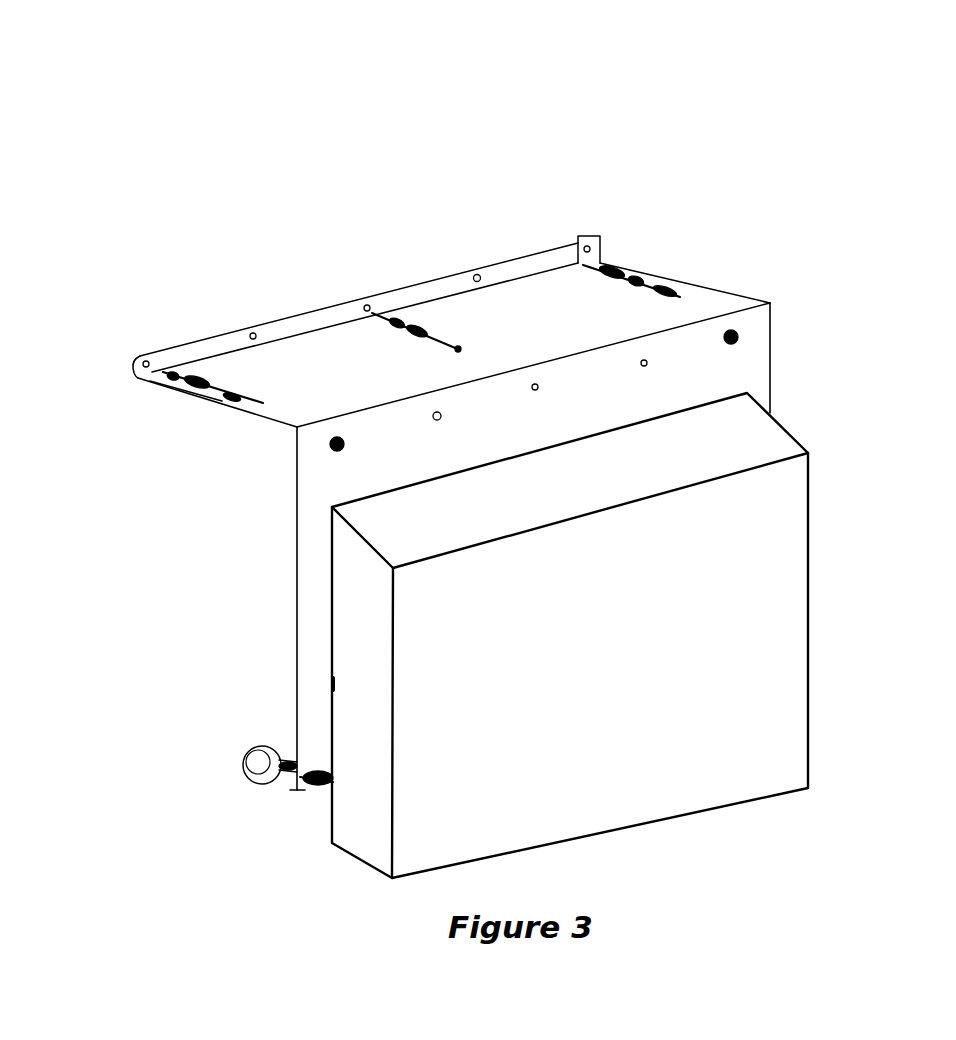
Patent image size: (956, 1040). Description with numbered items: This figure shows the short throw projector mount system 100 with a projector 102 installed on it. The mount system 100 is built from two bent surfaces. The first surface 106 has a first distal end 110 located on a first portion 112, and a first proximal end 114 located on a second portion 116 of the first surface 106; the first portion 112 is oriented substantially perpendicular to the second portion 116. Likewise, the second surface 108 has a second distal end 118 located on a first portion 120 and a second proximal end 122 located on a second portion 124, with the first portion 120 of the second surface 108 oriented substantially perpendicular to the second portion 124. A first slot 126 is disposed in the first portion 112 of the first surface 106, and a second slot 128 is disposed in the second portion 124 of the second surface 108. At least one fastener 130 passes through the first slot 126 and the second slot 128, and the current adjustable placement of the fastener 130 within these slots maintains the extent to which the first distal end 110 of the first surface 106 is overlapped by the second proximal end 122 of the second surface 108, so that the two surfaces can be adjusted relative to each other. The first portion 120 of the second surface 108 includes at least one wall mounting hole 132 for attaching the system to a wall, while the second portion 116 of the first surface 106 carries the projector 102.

The projector mount system 100 is at (202, 97).
The projector 102 is at (626, 669).
The first surface 106 is at (608, 396).
The second surface 108 is at (472, 320).
The first distal end 110 is at (305, 790).
The first portion of the first surface 112 is at (676, 281).
The first proximal end 114 is at (313, 603).
The second portion of the first surface 116 is at (705, 307).
The second distal end 118 is at (288, 367).
The first portion of the second surface 120 is at (315, 313).
The second proximal end 122 is at (192, 340).
The second portion of the second surface 124 is at (553, 283).
The first slot 126 is at (657, 287).
The second slot 128 is at (612, 266).
The fastener 130 is at (633, 279).
The wall mounting hole 132 is at (478, 278).